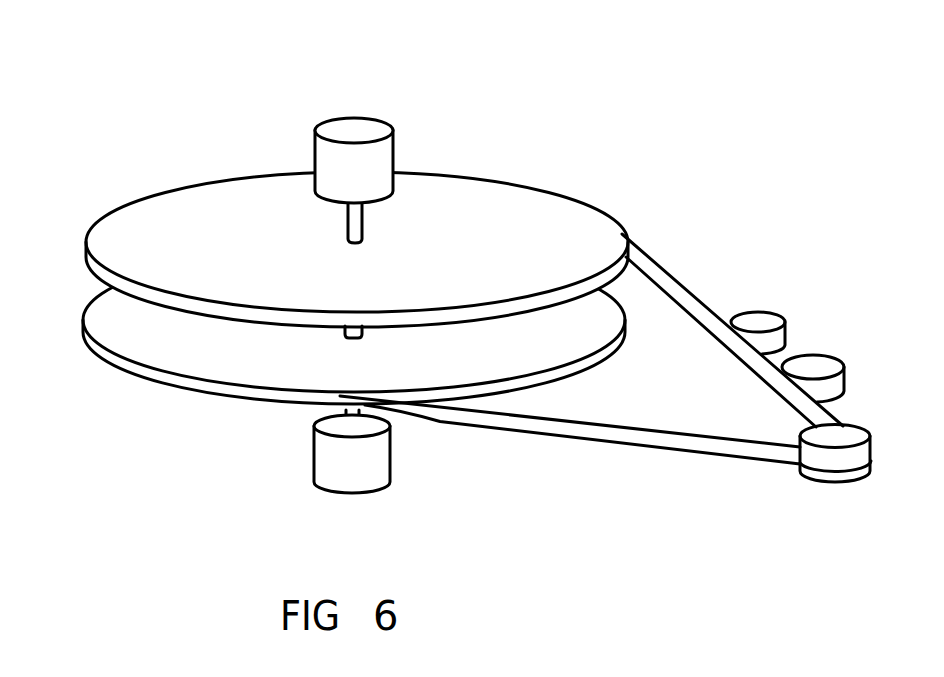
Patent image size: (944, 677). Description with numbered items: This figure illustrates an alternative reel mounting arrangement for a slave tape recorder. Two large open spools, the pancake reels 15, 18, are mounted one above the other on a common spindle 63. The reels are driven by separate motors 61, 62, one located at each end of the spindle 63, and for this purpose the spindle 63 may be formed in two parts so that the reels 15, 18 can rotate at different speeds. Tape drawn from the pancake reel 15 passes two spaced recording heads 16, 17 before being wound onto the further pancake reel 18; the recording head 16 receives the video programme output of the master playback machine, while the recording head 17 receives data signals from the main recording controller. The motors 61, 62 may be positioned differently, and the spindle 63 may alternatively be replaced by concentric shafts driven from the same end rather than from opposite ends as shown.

The pancake reel 15 is at (105, 238).
The pancake reel 18 is at (173, 365).
The motor 61 is at (318, 153).
The motor 62 is at (327, 467).
The common spindle 63 is at (362, 334).
The recording head 16 is at (755, 318).
The recording head 17 is at (810, 360).